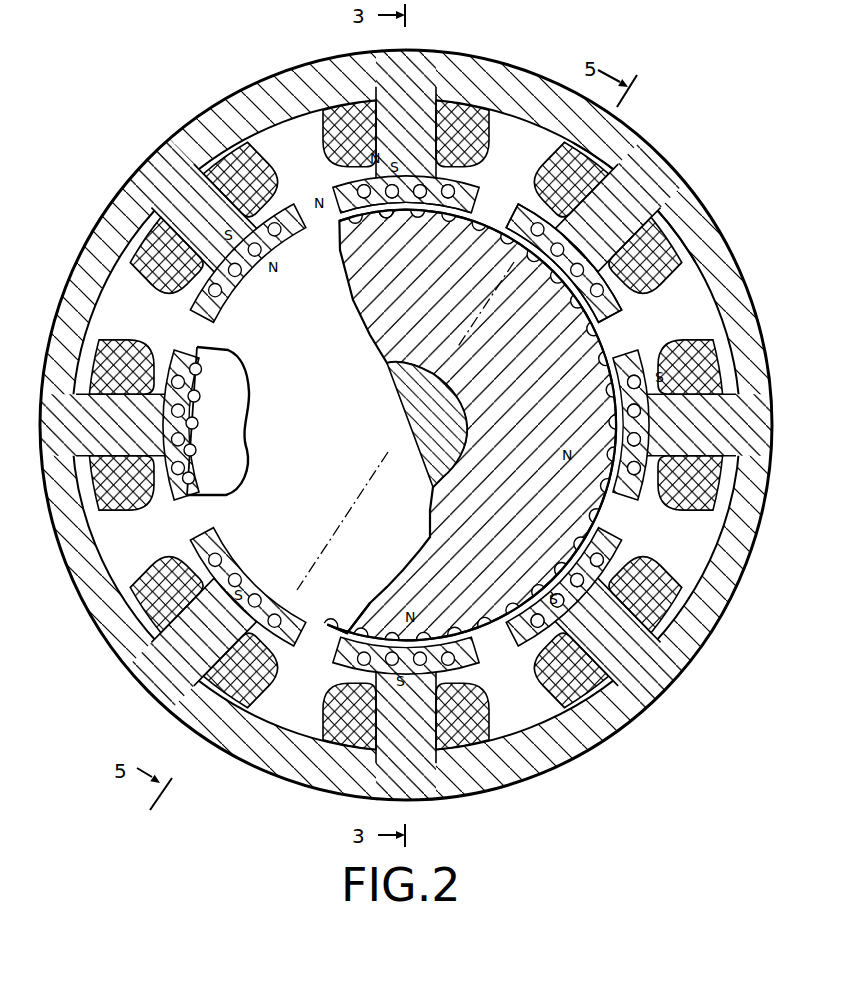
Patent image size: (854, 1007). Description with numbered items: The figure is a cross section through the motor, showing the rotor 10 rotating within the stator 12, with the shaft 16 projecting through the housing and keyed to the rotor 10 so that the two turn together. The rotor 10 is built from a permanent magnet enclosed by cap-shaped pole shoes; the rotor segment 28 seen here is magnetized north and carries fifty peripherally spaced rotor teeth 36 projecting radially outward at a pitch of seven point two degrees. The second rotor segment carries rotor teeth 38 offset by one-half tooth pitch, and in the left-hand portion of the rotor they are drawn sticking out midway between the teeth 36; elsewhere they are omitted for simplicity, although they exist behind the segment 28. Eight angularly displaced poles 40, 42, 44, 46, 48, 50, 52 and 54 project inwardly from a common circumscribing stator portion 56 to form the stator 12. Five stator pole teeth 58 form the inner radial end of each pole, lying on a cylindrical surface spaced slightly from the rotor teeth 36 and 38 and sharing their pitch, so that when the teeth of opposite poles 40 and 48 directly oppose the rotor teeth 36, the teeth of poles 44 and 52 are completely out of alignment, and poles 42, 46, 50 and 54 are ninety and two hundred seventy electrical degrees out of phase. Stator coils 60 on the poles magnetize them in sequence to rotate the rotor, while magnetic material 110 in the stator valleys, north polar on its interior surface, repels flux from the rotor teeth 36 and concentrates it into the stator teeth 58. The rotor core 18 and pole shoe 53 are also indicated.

The rotor 10 is at (521, 333).
The stator 12 is at (520, 78).
The shaft 16 is at (430, 412).
The rotor core 18 is at (357, 626).
The rotor pole shoe 28 is at (487, 262).
The rotor teeth 36 is at (398, 222).
The rotor teeth 38 is at (196, 363).
The pole 40 is at (400, 140).
The pole 42 is at (600, 224).
The pole 44 is at (655, 480).
The pole 46 is at (610, 633).
The pole 48 is at (413, 740).
The pole 50 is at (203, 627).
The pole 52 is at (113, 407).
The pole shoe 53 is at (570, 262).
The pole 54 is at (198, 172).
The common circumscribing stator portion 56 is at (655, 172).
The stator pole teeth 58 is at (375, 220).
The stator coils 60 is at (342, 122).
The magnetic material 110 is at (440, 188).